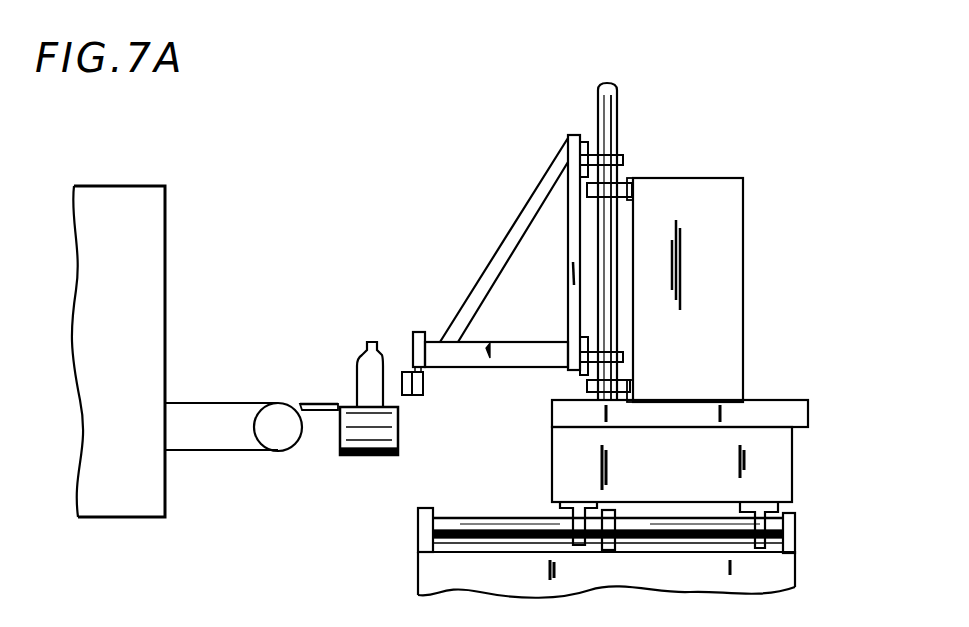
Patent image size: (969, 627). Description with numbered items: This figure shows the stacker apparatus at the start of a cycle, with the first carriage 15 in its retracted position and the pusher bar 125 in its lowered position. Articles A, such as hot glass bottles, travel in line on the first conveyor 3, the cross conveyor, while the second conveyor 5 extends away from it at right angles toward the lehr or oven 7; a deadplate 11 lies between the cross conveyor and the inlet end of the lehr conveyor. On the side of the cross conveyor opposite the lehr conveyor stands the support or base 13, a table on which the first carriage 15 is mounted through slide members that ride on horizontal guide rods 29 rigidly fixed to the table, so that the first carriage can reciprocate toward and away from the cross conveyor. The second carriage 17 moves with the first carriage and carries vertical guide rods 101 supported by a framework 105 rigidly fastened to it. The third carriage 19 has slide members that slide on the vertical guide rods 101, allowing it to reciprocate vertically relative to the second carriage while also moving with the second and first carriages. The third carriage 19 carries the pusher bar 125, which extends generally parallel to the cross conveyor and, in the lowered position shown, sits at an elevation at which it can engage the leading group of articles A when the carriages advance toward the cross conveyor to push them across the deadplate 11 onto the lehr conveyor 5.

The lehr or oven 7 is at (163, 186).
The second conveyor 5 is at (236, 402).
The deadplate 11 is at (323, 412).
The articles A is at (355, 362).
The first conveyor 3 is at (398, 435).
The pusher bar 125 is at (423, 385).
The third carriage 19 is at (533, 190).
The vertical guide rods 101 is at (620, 122).
The framework 105 is at (744, 229).
The second carriage 17 is at (813, 410).
The first carriage 15 is at (793, 470).
The horizontal guide rods 29 is at (518, 530).
The support or base 13 is at (418, 566).